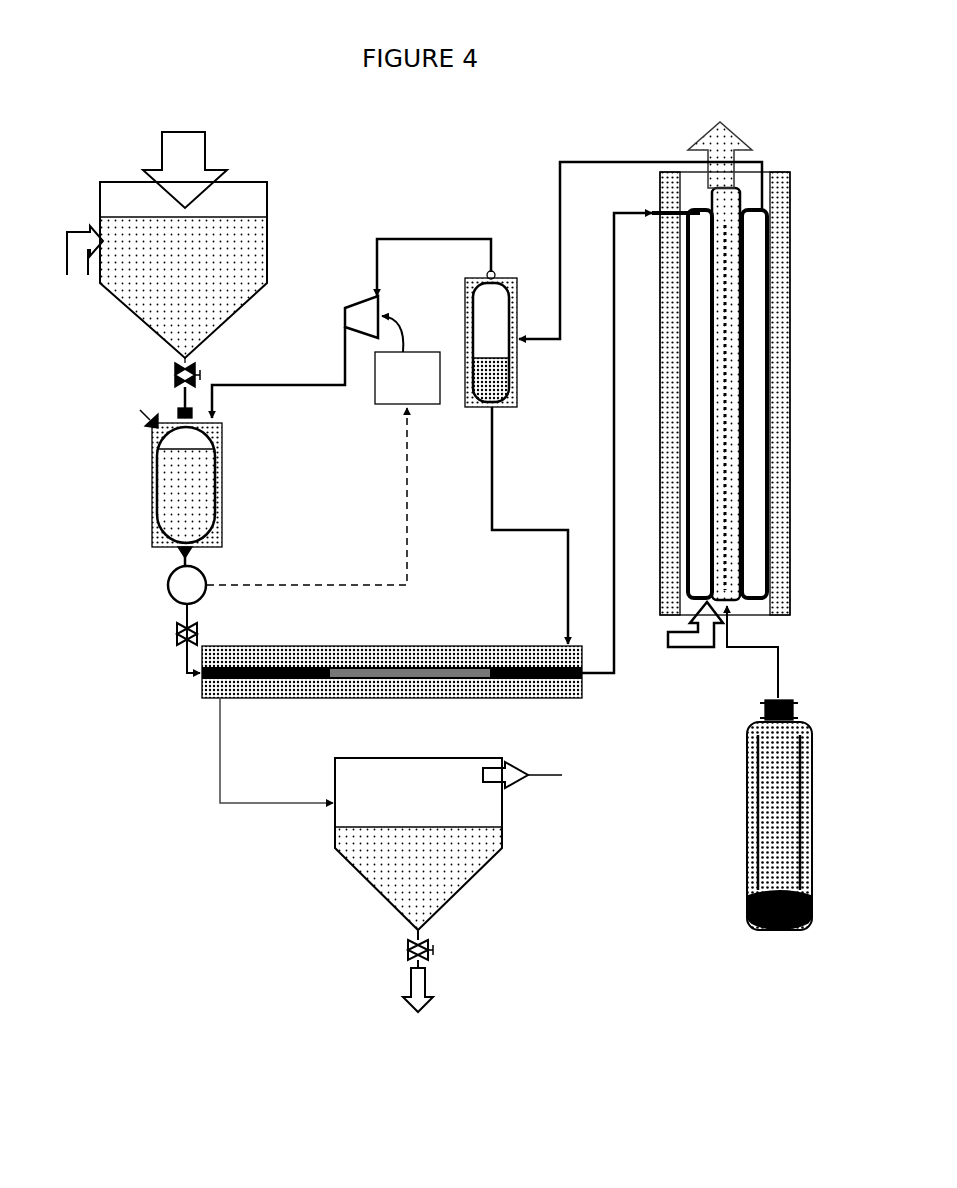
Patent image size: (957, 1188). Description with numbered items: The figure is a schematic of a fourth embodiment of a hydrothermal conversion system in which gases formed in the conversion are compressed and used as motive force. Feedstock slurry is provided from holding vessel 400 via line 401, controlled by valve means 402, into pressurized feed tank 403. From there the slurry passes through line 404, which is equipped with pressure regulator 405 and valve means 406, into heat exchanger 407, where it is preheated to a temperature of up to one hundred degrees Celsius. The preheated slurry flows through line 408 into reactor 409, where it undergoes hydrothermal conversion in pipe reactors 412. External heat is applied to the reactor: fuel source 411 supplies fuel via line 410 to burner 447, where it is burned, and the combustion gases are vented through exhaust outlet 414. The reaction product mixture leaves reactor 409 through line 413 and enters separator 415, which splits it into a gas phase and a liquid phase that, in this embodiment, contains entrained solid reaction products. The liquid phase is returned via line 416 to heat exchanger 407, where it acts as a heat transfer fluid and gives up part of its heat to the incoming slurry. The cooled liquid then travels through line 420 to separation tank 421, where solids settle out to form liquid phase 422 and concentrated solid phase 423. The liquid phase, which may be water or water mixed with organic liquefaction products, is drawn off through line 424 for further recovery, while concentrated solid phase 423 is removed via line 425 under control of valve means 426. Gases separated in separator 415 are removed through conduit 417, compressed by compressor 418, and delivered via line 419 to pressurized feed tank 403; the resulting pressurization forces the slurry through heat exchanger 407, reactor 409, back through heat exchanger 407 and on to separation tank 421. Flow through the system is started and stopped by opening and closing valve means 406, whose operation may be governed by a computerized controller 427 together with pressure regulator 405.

The holding vessel 400 is at (167, 245).
The line 401 is at (188, 360).
The valve means 402 is at (215, 365).
The pressurized feed tank 403 is at (181, 478).
The line 404 is at (180, 556).
The pressure regulator 405 is at (168, 588).
The valve means 406 is at (175, 632).
The heat exchanger 407 is at (208, 693).
The line 408 is at (613, 457).
The reactor 409 is at (792, 428).
The line 410 is at (776, 666).
The fuel source 411 is at (779, 815).
The pipe reactors 412 is at (745, 362).
The line 413 is at (558, 172).
The exhaust outlet 414 is at (718, 143).
The separator 415 is at (493, 318).
The line 416 is at (494, 515).
The conduit 417 is at (423, 238).
The compressor 418 is at (357, 298).
The line 419 is at (320, 388).
The line 420 is at (223, 772).
The separation tank 421 is at (330, 855).
The liquid phase 422 is at (418, 805).
The concentrated solid phase 423 is at (418, 878).
The line 424 is at (548, 775).
The line 425 is at (438, 985).
The valve means 426 is at (436, 945).
The computerized controller 427 is at (410, 562).
The burner 447 is at (732, 523).